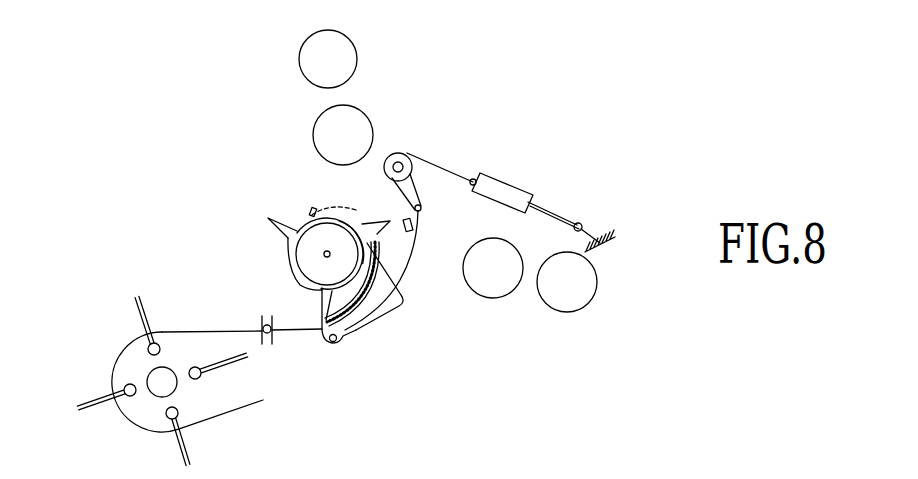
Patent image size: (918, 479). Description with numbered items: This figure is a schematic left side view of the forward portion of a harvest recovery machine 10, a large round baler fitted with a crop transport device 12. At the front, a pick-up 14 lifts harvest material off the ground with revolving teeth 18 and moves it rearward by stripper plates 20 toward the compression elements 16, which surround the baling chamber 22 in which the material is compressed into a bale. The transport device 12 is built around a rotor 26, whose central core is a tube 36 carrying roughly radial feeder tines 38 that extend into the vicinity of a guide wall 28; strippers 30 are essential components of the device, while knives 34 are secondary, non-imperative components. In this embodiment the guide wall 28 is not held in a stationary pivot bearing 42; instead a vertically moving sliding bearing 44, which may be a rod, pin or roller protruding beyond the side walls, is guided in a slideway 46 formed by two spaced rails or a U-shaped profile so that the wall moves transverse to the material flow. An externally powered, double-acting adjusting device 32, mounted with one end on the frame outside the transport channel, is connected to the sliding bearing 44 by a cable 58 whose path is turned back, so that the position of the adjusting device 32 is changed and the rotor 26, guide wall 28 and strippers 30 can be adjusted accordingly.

The harvest recovery machine 10 is at (214, 106).
The crop transport device 12 is at (248, 158).
The pick-up 14 is at (232, 425).
The compression elements 16 is at (353, 110).
The teeth 18 is at (98, 393).
The stripper plates 20 is at (196, 327).
The baling chamber 22 is at (528, 97).
The rotor 26 is at (278, 254).
The guide wall 28 is at (405, 258).
The strippers 30 is at (322, 307).
The adjusting device 32 is at (528, 186).
The knives 34 is at (388, 311).
The tube 36 is at (312, 226).
The feeder tines 38 is at (280, 219).
The pivot bearing 42 is at (422, 211).
The sliding bearing 44 is at (270, 322).
The slideway 46 is at (264, 328).
The cable 58 is at (441, 157).